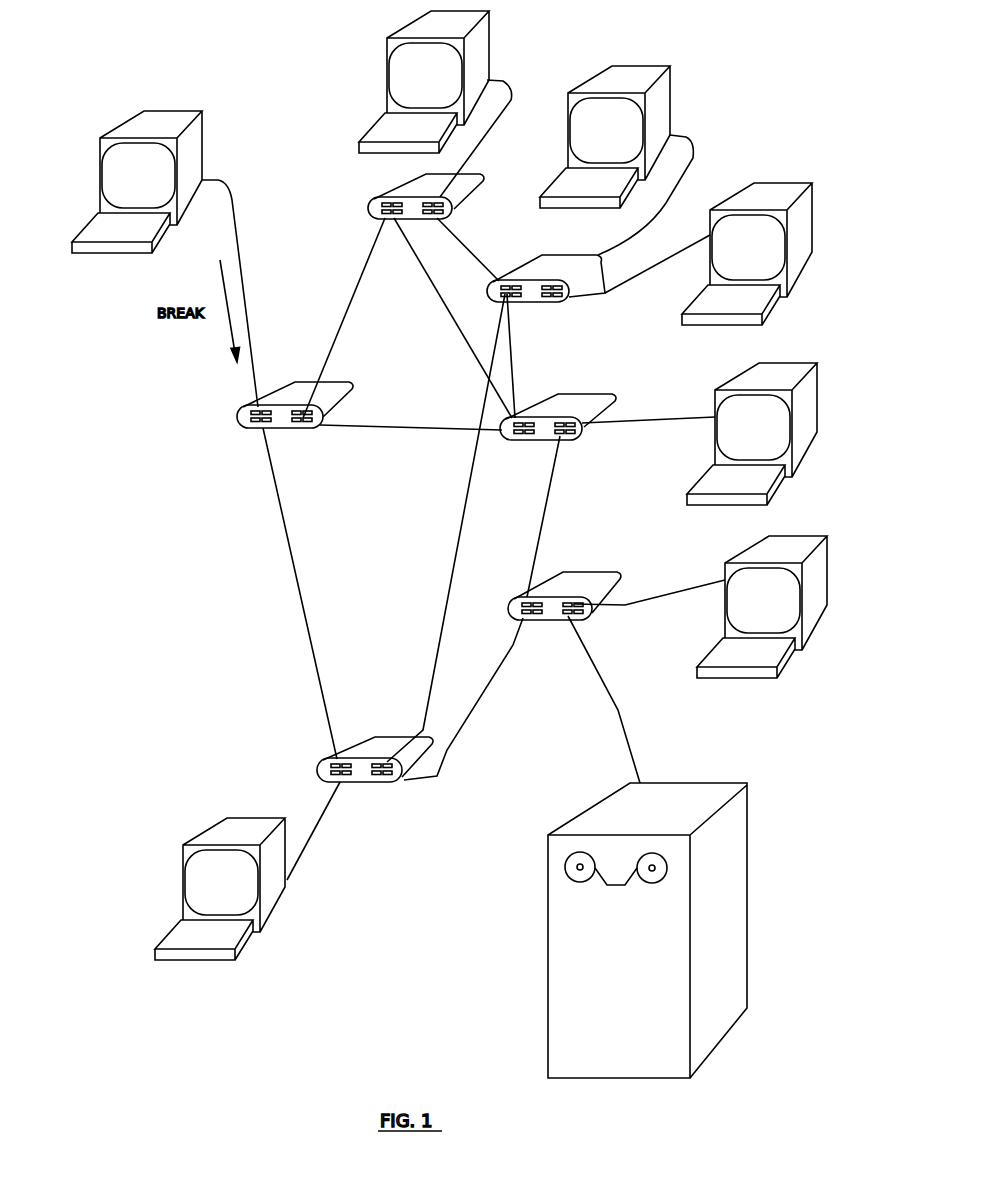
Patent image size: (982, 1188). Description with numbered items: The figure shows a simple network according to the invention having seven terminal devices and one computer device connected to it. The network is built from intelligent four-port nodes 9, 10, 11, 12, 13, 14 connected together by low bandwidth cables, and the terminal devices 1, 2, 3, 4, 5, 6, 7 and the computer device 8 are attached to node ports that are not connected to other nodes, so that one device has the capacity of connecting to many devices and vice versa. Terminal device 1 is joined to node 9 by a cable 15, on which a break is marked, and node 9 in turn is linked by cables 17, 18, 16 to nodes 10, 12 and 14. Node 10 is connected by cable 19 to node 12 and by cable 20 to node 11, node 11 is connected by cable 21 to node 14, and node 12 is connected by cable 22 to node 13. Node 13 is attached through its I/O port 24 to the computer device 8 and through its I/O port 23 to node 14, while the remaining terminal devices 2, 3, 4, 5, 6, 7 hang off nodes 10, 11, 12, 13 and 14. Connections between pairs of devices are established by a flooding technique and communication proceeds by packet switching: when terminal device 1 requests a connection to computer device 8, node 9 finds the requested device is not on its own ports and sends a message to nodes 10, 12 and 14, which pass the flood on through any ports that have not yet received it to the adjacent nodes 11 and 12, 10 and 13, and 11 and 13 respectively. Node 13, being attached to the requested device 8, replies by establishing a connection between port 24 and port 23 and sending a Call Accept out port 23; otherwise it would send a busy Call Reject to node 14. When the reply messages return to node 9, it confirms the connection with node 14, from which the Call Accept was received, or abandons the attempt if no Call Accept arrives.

The terminal device 1 is at (188, 111).
The terminal device 2 is at (488, 38).
The terminal device 3 is at (670, 97).
The terminal device 4 is at (790, 182).
The terminal device 5 is at (793, 363).
The terminal device 6 is at (792, 537).
The terminal device 7 is at (207, 828).
The computer device 8 is at (547, 957).
The node 9 is at (288, 382).
The node 10 is at (368, 208).
The node 11 is at (535, 302).
The node 12 is at (588, 395).
The node 13 is at (603, 572).
The node 14 is at (393, 733).
The cable 15 is at (247, 284).
The cable 16 is at (291, 522).
The cable 17 is at (347, 320).
The cable 18 is at (382, 425).
The cable 19 is at (433, 280).
The cable 20 is at (480, 241).
The cable 21 is at (498, 338).
The cable 22 is at (550, 485).
The I/O port 23 is at (493, 685).
The I/O port 24 is at (609, 697).